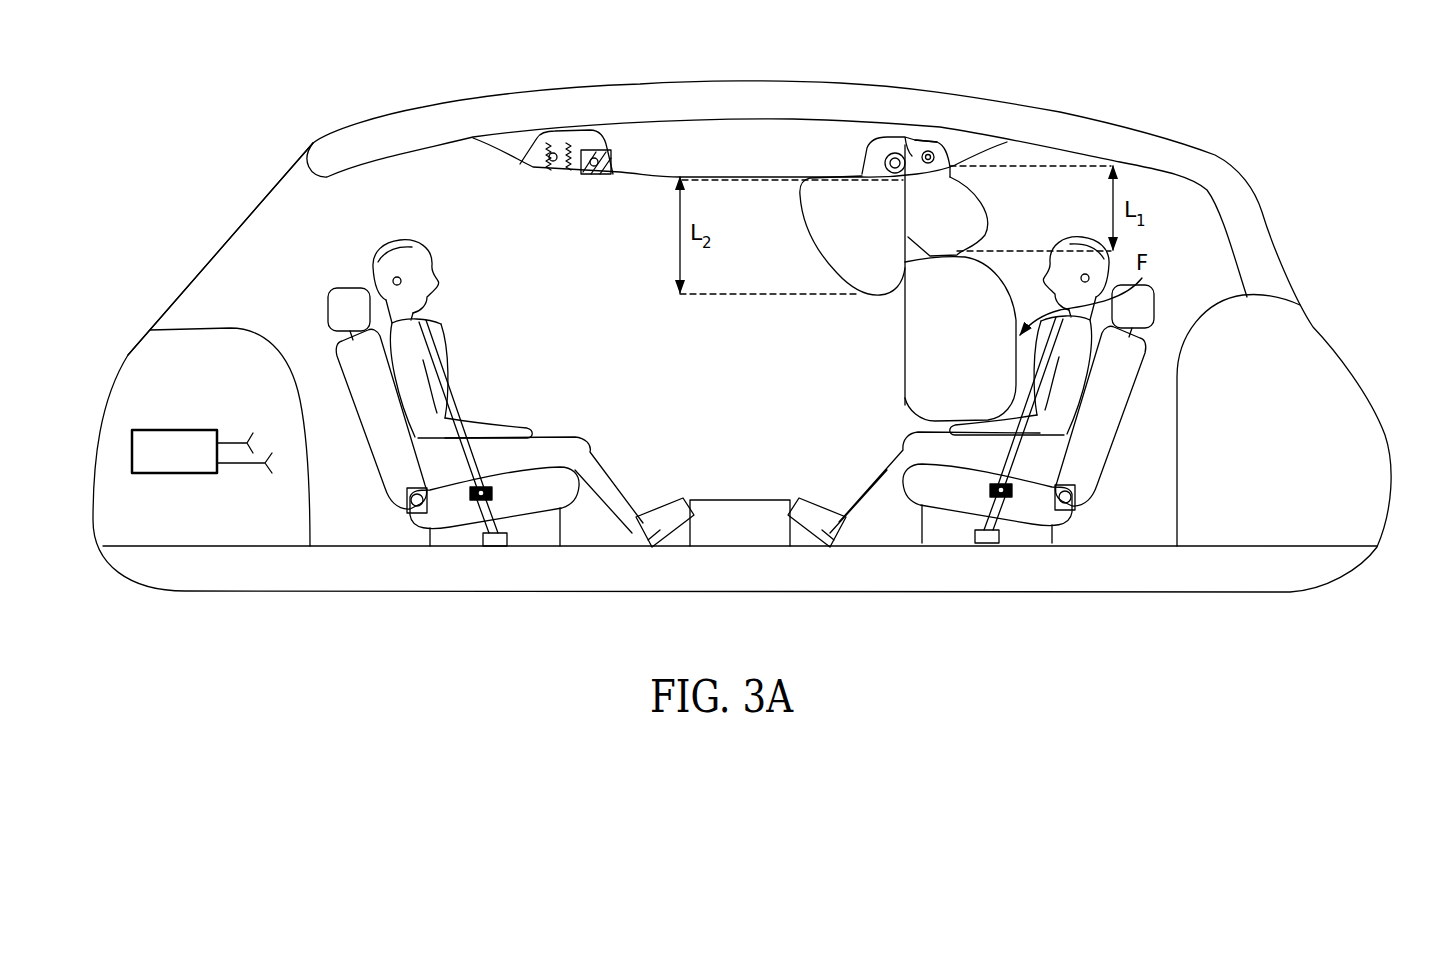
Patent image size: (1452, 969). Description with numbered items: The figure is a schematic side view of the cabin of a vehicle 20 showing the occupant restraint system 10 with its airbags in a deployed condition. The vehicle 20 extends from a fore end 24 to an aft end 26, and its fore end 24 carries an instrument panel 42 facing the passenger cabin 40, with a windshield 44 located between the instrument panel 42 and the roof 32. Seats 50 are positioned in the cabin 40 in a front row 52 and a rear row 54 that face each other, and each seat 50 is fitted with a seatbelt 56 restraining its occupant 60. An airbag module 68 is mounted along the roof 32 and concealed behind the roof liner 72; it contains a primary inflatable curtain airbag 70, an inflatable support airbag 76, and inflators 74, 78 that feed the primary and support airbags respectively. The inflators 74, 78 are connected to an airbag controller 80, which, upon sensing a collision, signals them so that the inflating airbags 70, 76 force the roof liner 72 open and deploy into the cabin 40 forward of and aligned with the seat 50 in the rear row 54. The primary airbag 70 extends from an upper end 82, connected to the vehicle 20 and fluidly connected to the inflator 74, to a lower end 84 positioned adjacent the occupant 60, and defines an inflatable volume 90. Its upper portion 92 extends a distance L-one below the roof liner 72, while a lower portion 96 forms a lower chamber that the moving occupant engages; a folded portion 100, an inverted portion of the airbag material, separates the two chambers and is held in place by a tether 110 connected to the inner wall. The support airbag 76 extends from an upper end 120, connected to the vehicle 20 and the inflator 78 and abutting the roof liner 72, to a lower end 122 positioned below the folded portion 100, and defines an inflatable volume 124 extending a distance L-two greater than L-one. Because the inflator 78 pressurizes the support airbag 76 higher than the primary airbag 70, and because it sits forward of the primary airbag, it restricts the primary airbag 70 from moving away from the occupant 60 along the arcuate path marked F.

The occupant restraint system 10 is at (927, 116).
The vehicle 20 is at (1356, 462).
The first or fore end 24 is at (160, 270).
The second or aft end 26 is at (1332, 275).
The roof 32 is at (1045, 130).
The passenger compartment or cabin 40 is at (723, 343).
The instrument panel 42 is at (248, 333).
The windshield or windscreen 44 is at (232, 236).
The seat 50 is at (395, 487).
The front row 52 is at (476, 598).
The rear row 54 is at (985, 598).
The seatbelt 56 is at (457, 410).
The occupant 60 is at (428, 360).
The airbag module 68 is at (571, 128).
The primary inflatable curtain airbag 70 is at (523, 167).
The roof liner 72 is at (640, 178).
The inflator 74 is at (554, 162).
The inflatable support airbag 76 is at (614, 150).
The inflator 78 is at (594, 167).
The airbag controller 80 is at (177, 440).
The upper end 82 is at (938, 134).
The lower end 84 is at (906, 414).
The inflatable volume 90 is at (929, 332).
The upper portion 92 is at (954, 198).
The lower portion 96 is at (912, 290).
The folded portion 100 is at (958, 253).
The tether 110 is at (918, 268).
The upper end 120 is at (878, 163).
The lower end 122 is at (830, 290).
The inflatable volume 124 is at (840, 215).